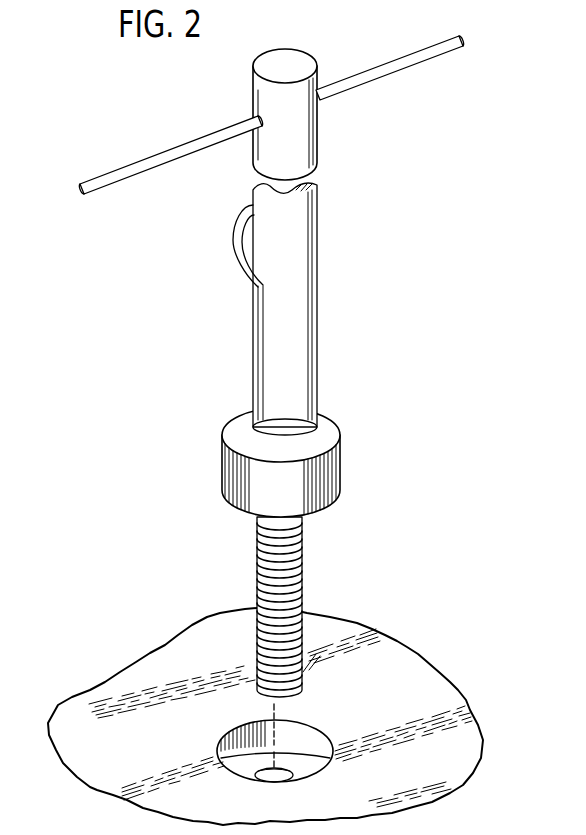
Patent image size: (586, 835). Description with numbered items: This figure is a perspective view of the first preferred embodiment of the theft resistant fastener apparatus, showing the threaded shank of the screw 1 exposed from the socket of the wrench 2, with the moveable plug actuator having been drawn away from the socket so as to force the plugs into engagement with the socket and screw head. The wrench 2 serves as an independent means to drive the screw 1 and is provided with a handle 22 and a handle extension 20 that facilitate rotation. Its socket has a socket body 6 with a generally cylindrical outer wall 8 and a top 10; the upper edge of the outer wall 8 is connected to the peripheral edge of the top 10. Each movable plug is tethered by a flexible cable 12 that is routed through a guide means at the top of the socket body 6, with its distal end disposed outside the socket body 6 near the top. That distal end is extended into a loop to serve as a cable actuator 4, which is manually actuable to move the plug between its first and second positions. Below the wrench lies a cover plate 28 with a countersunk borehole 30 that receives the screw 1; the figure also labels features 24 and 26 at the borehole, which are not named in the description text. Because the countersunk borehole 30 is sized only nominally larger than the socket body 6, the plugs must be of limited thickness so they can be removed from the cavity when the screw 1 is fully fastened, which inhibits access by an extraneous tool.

The screw 1 is at (313, 566).
The wrench 2 is at (288, 306).
The cable actuator 4 is at (237, 227).
The socket body 6 is at (287, 450).
The outer wall 8 is at (222, 449).
The top 10 is at (230, 421).
The flexible cable 12 is at (266, 333).
The handle extension 20 is at (371, 65).
The handle 22 is at (320, 125).
The hole 24 is at (296, 765).
The countersunk recess 26 is at (317, 736).
The cover plate 28 is at (164, 732).
The countersunk borehole 30 is at (306, 719).